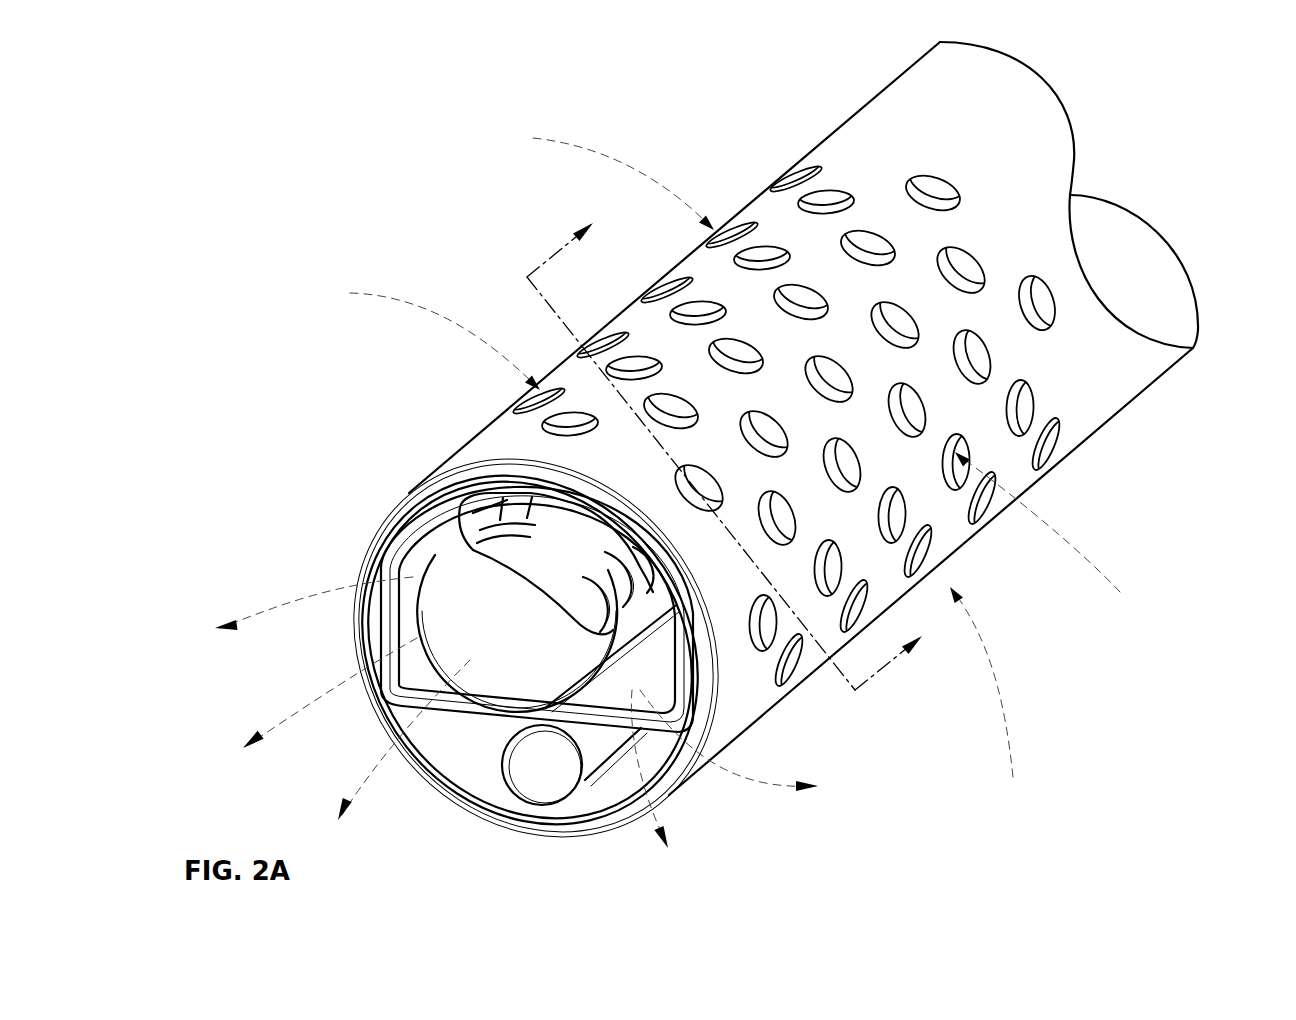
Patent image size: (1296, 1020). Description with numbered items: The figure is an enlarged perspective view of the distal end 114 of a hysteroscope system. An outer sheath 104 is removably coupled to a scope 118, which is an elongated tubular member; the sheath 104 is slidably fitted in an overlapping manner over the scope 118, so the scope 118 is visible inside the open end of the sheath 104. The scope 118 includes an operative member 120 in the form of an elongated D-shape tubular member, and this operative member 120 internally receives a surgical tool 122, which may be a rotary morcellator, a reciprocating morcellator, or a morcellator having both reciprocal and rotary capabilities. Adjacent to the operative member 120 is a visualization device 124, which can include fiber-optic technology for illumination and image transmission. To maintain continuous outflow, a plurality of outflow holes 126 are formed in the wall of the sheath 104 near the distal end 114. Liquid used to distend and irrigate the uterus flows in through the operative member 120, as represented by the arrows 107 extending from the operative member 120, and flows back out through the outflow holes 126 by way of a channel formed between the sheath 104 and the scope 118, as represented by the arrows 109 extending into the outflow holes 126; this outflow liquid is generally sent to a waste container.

The sheath 104 is at (907, 103).
The arrows 107 is at (315, 618).
The arrows 109 is at (570, 163).
The distal end 114 is at (313, 190).
The scope 118 is at (468, 745).
The operative member 120 is at (622, 697).
The surgical tool 122 is at (473, 580).
The visualization device 124 is at (537, 770).
The outflow holes 126 is at (1042, 291).